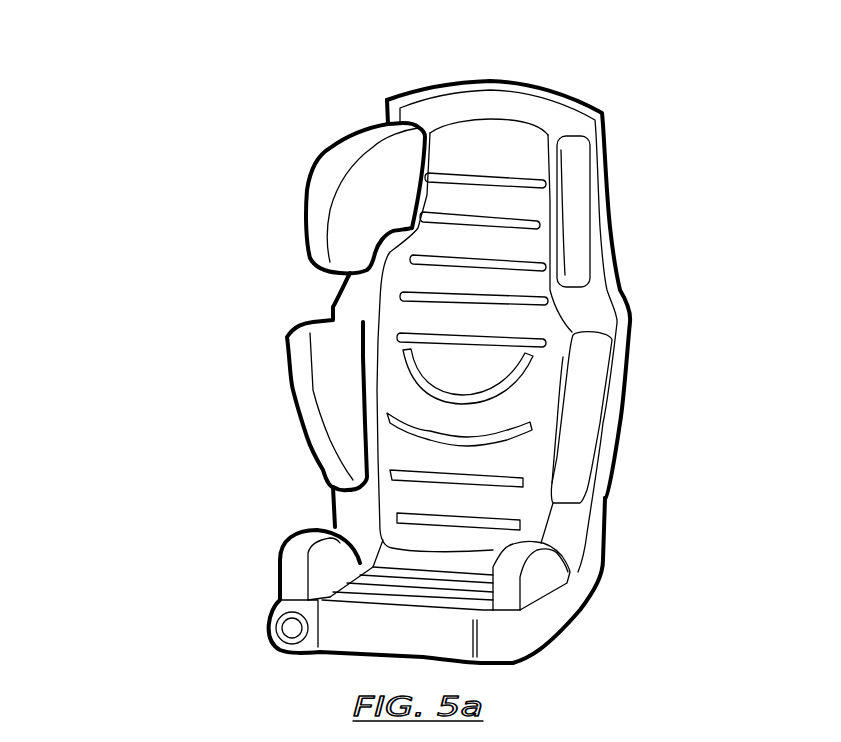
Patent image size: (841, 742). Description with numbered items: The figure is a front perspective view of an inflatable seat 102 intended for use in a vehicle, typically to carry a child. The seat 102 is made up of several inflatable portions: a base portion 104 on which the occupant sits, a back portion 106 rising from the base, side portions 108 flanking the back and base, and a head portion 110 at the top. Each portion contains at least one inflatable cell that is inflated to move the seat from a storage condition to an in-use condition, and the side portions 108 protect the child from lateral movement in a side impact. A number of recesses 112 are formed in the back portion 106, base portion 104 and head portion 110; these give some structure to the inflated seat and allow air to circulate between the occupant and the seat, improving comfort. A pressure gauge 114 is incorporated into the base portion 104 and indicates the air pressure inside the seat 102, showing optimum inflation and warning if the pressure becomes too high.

The inflatable seat 102 is at (223, 357).
The base portion 104 is at (430, 643).
The back portion 106 is at (463, 458).
The side portions 108 is at (333, 180).
The head portion 110 is at (478, 163).
The recesses 112 is at (430, 433).
The pressure gauge 114 is at (290, 627).